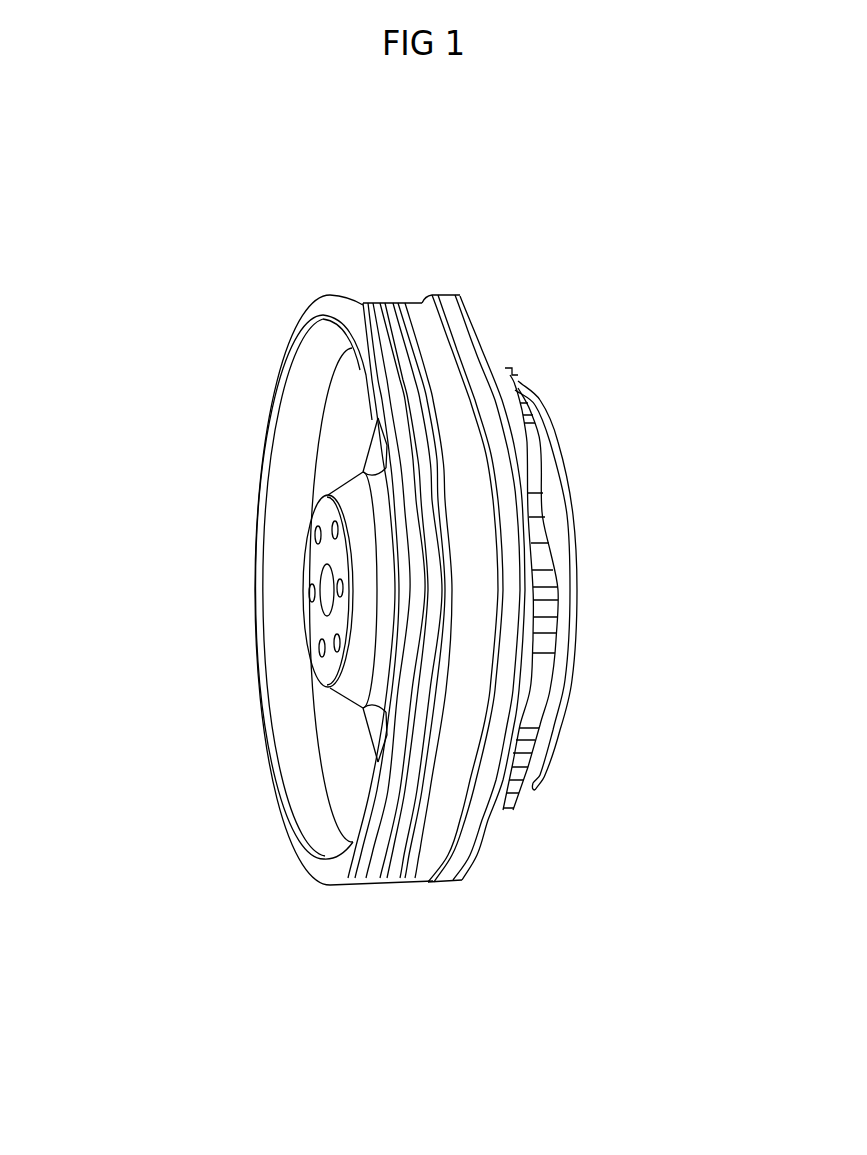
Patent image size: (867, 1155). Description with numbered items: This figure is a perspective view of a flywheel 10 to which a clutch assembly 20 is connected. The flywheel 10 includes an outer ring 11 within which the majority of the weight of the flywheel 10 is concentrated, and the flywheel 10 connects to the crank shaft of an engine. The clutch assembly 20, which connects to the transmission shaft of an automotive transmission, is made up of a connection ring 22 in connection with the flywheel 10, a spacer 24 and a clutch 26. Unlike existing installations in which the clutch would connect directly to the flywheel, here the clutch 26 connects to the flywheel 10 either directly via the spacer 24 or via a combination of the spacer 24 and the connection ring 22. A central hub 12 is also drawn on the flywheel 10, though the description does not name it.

The flywheel 10 is at (516, 654).
The outer ring 11 is at (308, 863).
The hub 12 is at (317, 623).
The clutch assembly 20 is at (633, 567).
The connection ring 22 is at (495, 840).
The spacer 24 is at (528, 680).
The clutch 26 is at (568, 619).